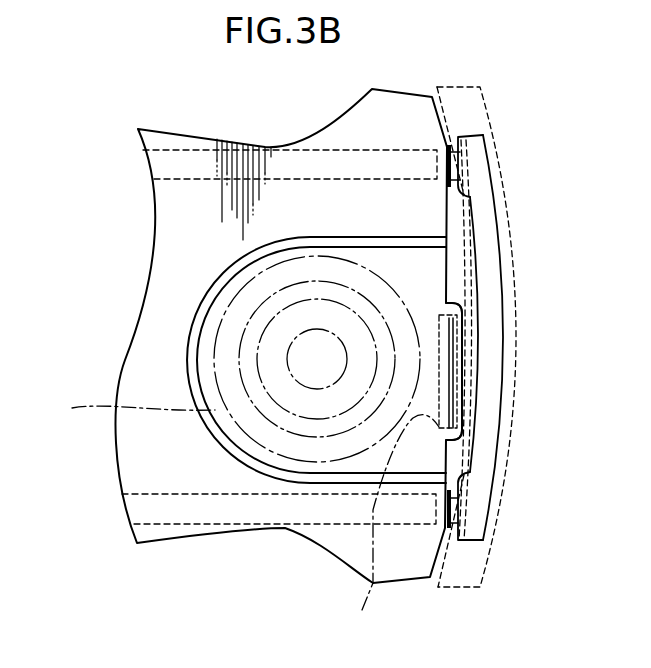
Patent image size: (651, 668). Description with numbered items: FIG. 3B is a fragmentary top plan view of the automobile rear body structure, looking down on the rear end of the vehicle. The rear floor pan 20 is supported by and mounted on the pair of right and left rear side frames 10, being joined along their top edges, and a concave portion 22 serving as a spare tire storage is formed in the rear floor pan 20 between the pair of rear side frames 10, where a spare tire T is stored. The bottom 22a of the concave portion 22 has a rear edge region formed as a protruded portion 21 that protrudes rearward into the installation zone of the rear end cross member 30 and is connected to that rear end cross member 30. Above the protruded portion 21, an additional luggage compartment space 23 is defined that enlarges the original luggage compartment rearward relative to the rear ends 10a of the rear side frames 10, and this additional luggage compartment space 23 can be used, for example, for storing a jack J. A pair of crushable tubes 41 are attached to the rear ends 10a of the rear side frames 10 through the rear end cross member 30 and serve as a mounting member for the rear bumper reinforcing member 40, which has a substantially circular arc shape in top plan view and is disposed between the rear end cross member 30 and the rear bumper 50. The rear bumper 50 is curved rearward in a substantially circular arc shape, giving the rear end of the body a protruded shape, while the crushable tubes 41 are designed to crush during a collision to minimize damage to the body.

The rear side frame 10 is at (203, 147).
The rear end of rear side frame 10a is at (447, 148).
The rear floor pan 20 is at (132, 445).
The protruded portion 21 is at (465, 353).
The concave portion 22 is at (176, 369).
The bottom of concave portion 22a is at (362, 256).
The additional luggage compartment space 23 is at (434, 294).
The rear end cross member 30 is at (477, 232).
The rear bumper reinforcing member 40 is at (490, 282).
The crushable tube 41 is at (460, 193).
The rear bumper 50 is at (488, 102).
The spare tire T is at (133, 410).
The jack J is at (395, 524).